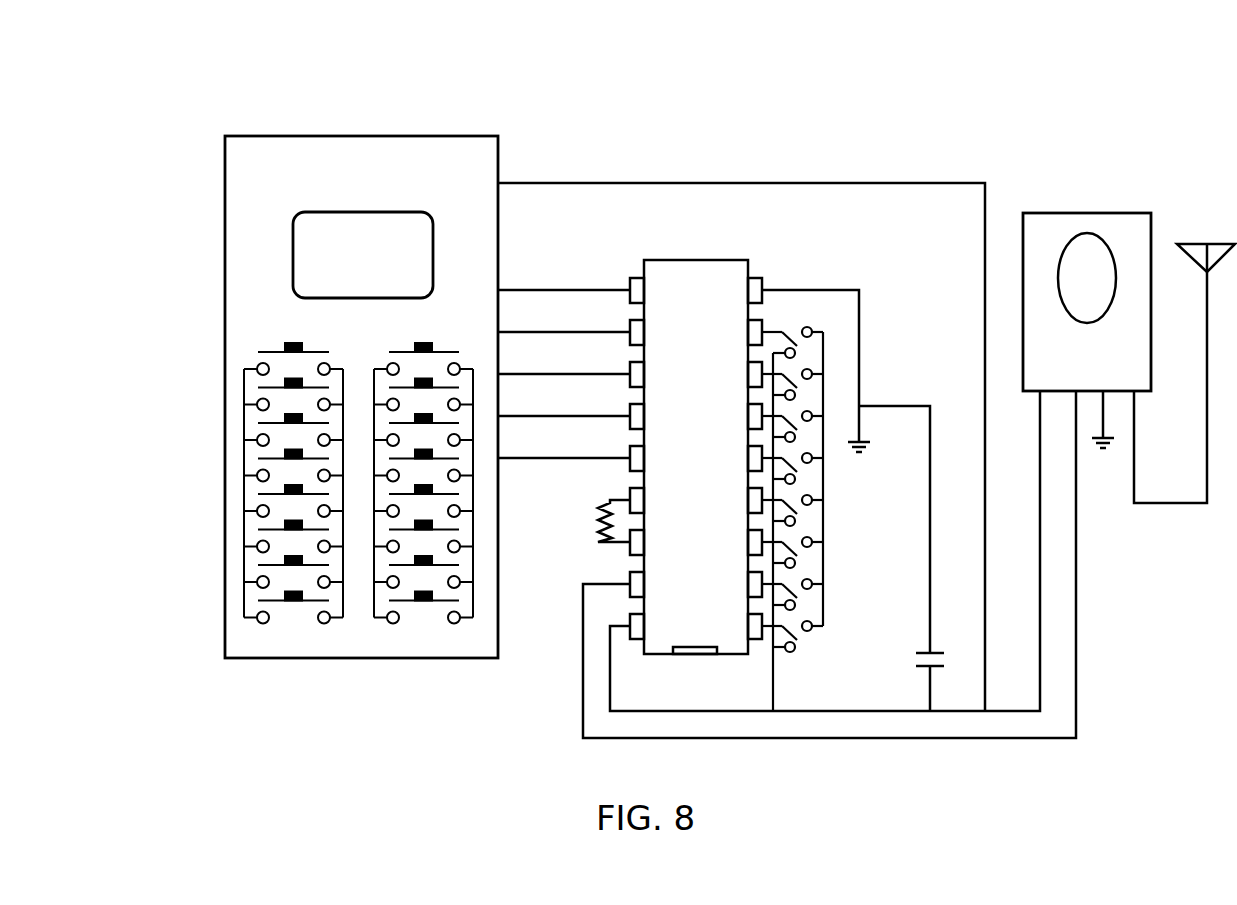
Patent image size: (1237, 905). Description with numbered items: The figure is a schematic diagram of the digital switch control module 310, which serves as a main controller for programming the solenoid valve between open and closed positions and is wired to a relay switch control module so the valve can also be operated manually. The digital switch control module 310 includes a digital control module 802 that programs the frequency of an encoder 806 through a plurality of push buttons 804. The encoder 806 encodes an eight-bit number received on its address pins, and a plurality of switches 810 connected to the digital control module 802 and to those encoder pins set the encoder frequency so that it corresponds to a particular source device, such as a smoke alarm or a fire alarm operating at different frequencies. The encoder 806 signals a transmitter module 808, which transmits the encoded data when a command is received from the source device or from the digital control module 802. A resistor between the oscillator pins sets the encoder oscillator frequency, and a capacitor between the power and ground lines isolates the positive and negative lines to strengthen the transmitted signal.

The digital switch control module 310 is at (810, 134).
The digital control module 802 is at (225, 210).
The push buttons 804 is at (232, 355).
The encoder 806 is at (648, 268).
The transmitter module 808 is at (1063, 218).
The switches 810 is at (850, 536).